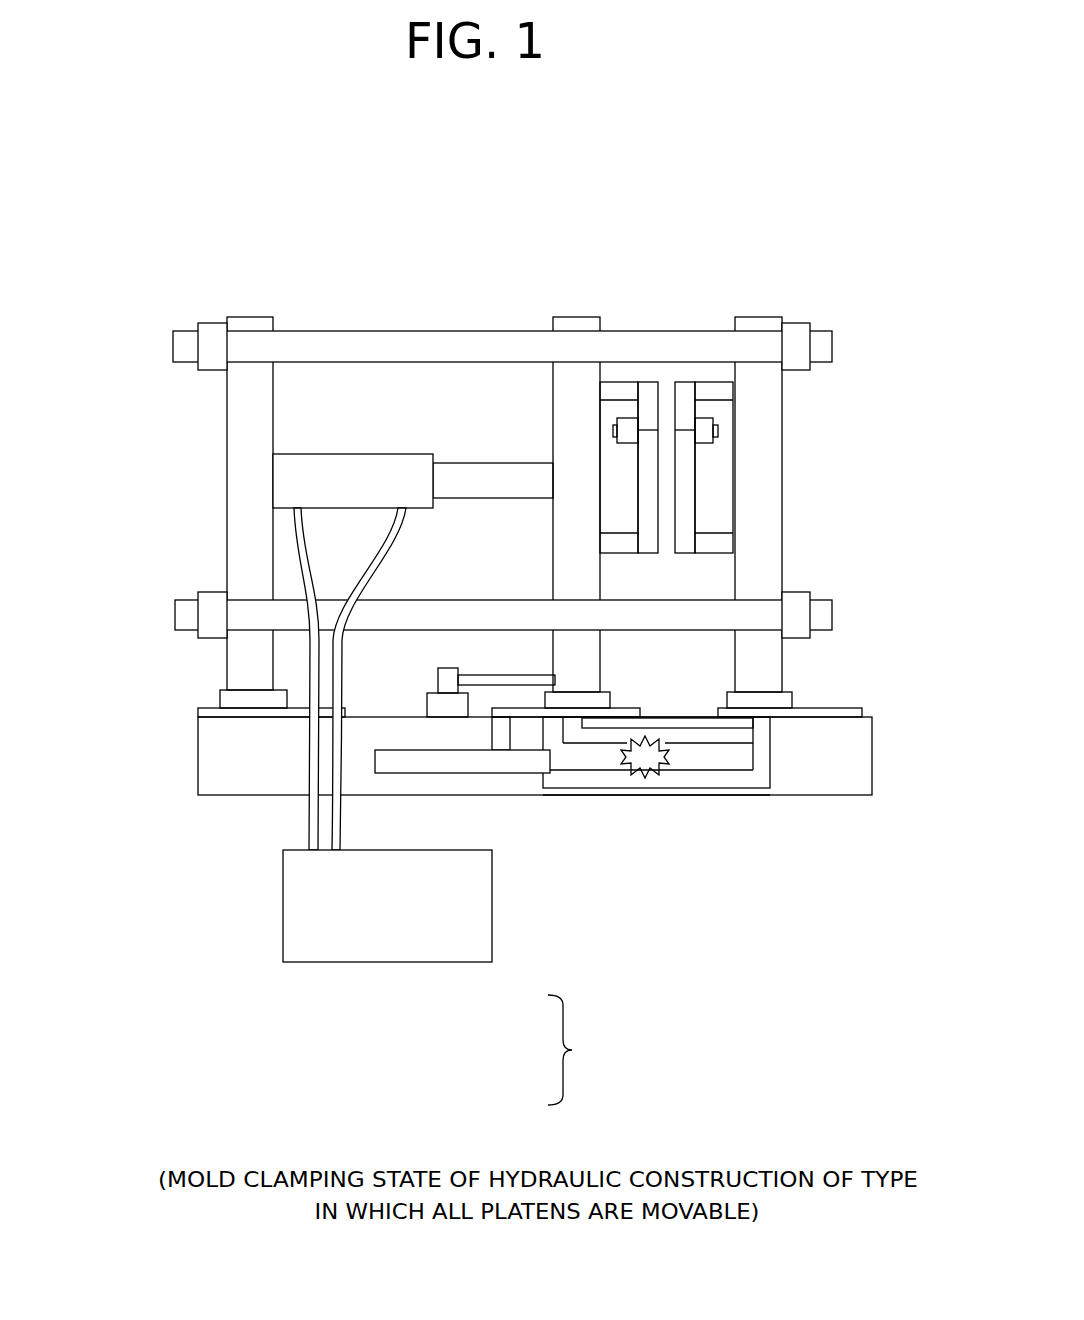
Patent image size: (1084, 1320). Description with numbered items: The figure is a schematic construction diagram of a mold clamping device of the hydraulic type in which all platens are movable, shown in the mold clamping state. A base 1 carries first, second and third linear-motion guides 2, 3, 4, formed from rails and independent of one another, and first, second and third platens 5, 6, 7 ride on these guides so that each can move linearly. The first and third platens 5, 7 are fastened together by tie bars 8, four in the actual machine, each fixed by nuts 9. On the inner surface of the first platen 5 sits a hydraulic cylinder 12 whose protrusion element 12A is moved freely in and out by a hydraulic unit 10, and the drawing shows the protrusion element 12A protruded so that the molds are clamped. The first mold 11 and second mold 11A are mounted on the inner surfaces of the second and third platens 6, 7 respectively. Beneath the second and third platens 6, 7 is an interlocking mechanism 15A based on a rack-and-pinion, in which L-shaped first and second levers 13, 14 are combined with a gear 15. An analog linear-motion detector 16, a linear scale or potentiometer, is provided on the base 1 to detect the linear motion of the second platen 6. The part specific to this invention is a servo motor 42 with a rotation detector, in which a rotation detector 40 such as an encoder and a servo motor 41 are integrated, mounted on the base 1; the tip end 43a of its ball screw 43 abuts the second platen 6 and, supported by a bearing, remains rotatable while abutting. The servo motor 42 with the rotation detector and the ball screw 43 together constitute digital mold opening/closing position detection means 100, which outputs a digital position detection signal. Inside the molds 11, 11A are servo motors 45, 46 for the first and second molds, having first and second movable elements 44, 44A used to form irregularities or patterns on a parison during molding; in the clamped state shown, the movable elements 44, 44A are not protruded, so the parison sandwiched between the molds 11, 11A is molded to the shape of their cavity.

The base 1 is at (234, 778).
The first linear-motion guide 2 is at (217, 703).
The second linear-motion guide 3 is at (623, 707).
The third linear-motion guide 4 is at (843, 705).
The first platen 5 is at (248, 322).
The second platen 6 is at (588, 322).
The third platen 7 is at (757, 327).
The tie bar 8 is at (317, 340).
The nut 9 is at (210, 322).
The hydraulic unit 10 is at (315, 947).
The first mold 11 is at (625, 545).
The second mold 11A is at (712, 542).
The hydraulic cylinder 12 is at (323, 453).
The protrusion element 12A is at (460, 463).
The first lever 13 is at (692, 725).
The second lever 14 is at (730, 790).
The gear 15 is at (633, 772).
The interlocking mechanism 15A is at (678, 805).
The analog linear-motion detector 16 is at (523, 760).
The rotation detector 40 is at (462, 761).
The servo motor 41 is at (462, 761).
The servo motor with rotation detector 42 is at (462, 907).
The ball screw 43 is at (486, 687).
The tip end 43a is at (553, 673).
The first movable element 44 is at (647, 432).
The second movable element 44A is at (678, 432).
The servo motor for first mold 45 is at (617, 421).
The servo motor for second mold 46 is at (702, 447).
The digital mold opening/closing position detection means 100 is at (585, 1050).